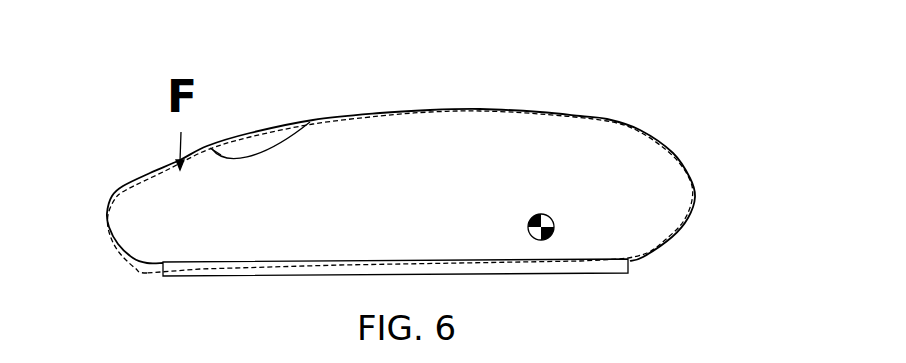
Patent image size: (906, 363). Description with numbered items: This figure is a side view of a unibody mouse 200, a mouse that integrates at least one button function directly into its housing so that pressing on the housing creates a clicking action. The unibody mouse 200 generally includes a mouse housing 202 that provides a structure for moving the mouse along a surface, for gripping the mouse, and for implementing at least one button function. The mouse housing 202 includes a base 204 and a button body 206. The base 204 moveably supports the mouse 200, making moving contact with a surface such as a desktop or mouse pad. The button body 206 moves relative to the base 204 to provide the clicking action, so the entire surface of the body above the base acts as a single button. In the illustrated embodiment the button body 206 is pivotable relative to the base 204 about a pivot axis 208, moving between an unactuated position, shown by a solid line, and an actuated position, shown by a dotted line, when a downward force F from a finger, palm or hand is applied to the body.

The unibody mouse 200 is at (366, 142).
The mouse housing 202 is at (116, 179).
The base 204 is at (557, 274).
The button body 206 is at (347, 157).
The pivot axis 208 is at (552, 238).